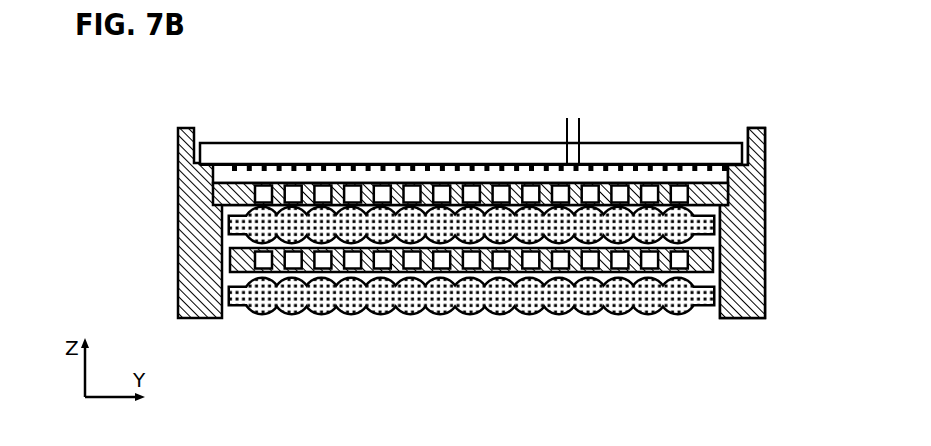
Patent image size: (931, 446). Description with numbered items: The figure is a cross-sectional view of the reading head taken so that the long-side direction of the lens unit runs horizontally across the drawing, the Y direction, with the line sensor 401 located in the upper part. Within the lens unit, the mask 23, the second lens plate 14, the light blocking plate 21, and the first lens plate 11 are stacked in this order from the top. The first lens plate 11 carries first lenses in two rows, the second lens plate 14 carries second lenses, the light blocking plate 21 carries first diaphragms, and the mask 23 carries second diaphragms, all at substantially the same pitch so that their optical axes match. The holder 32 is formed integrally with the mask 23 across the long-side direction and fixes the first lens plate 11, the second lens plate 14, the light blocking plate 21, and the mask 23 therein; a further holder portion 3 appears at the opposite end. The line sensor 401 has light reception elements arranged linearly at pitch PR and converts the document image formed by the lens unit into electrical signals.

The frame (left side wall) 3 is at (178, 145).
The holder 32 is at (745, 214).
The mask 23 is at (254, 185).
The light blocking plate 21 is at (230, 257).
The second lens plate 14 is at (230, 223).
The first lens plate 11 is at (230, 293).
The line sensor 401 is at (462, 160).
The pitch PR is at (610, 126).